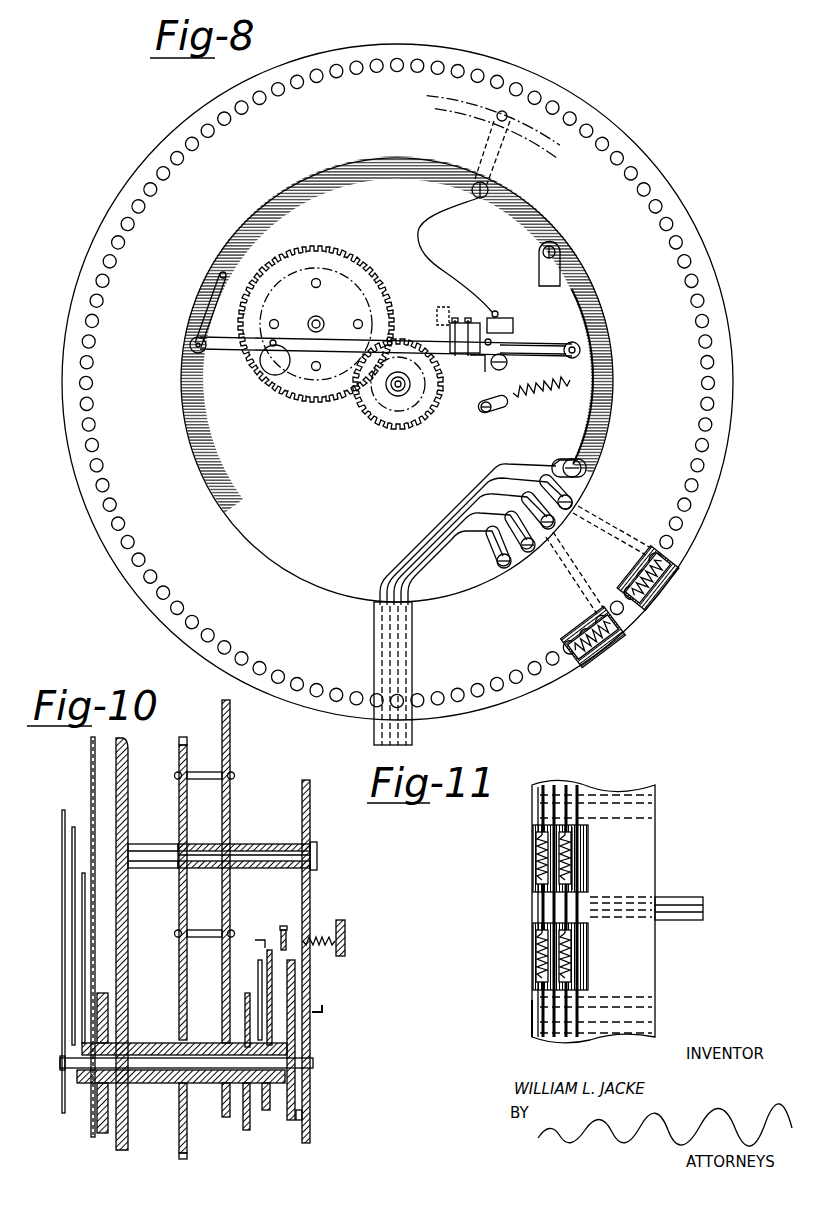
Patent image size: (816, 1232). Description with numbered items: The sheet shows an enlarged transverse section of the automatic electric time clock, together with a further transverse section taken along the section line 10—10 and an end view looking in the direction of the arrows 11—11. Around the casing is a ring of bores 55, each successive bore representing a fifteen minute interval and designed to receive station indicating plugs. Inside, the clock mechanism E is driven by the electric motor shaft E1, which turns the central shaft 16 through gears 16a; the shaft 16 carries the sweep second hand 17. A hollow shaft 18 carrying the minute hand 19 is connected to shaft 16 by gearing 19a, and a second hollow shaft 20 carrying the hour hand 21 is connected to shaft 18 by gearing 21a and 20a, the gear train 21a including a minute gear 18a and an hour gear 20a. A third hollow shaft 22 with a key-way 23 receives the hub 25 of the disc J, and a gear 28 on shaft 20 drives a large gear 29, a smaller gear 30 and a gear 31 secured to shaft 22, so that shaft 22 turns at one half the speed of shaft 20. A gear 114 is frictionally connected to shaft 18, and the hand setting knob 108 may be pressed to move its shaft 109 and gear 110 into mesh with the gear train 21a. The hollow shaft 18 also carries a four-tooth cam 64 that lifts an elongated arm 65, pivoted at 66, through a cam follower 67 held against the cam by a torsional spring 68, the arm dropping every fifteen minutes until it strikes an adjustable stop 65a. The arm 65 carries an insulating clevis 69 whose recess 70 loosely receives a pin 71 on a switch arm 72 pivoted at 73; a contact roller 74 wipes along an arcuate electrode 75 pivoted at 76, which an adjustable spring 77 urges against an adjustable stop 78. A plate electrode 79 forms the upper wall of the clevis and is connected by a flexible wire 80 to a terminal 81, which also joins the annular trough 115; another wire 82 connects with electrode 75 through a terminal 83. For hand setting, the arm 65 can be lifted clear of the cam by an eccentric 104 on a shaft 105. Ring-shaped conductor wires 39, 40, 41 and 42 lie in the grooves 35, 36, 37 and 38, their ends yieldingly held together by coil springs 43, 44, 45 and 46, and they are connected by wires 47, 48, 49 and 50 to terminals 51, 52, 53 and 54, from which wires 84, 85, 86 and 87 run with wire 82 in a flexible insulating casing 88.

In FIG. 8, the section line 10 is at (238, 264).
In FIG. 8, the direction arrows 11 is at (707, 592).
In FIG. 8, the groove 35 is at (693, 494).
In FIG. 11, the groove 35 is at (532, 788).
In FIG. 11, the groove 36 is at (548, 784).
In FIG. 11, the groove 37 is at (557, 790).
In FIG. 11, the groove 38 is at (580, 793).
In FIG. 11, the conductor wire 39 is at (542, 973).
In FIG. 11, the conductor wire 40 is at (542, 900).
In FIG. 11, the conductor wire 41 is at (557, 993).
In FIG. 11, the conductor wire 42 is at (575, 873).
In FIG. 8, the coil spring 43 is at (660, 588).
In FIG. 11, the coil spring 43 is at (537, 852).
In FIG. 8, the coil spring 44 is at (610, 647).
In FIG. 11, the coil spring 44 is at (543, 950).
In FIG. 11, the coil spring 45 is at (569, 850).
In FIG. 11, the coil spring 46 is at (582, 957).
In FIG. 8, the wire 47 is at (582, 502).
In FIG. 11, the wire 47 is at (542, 832).
In FIG. 8, the wire 48 is at (572, 530).
In FIG. 11, the wire 48 is at (542, 930).
In FIG. 8, the wire 49 is at (565, 556).
In FIG. 11, the wire 49 is at (575, 830).
In FIG. 8, the wire 50 is at (508, 575).
In FIG. 11, the wire 50 is at (580, 928).
In FIG. 8, the terminal 51 is at (583, 500).
In FIG. 8, the terminal 52 is at (553, 535).
In FIG. 8, the terminal 53 is at (531, 556).
In FIG. 8, the terminal 54 is at (503, 575).
In FIG. 8, the bores 55 is at (124, 249).
In FIG. 8, the four-tooth cam 64 is at (376, 418).
In FIG. 10, the four-tooth cam 64 is at (258, 1112).
In FIG. 8, the elongated arm 65 is at (437, 332).
In FIG. 8, the adjustable stop 65a is at (500, 395).
In FIG. 8, the pivot 66 is at (206, 355).
In FIG. 8, the cam follower 67 is at (452, 353).
In FIG. 8, the torsional spring 68 is at (212, 300).
In FIG. 8, the clevis 69 is at (485, 372).
In FIG. 8, the recess 70 is at (515, 360).
In FIG. 8, the pin 71 is at (493, 342).
In FIG. 8, the switch arm 72 is at (540, 353).
In FIG. 8, the pivot 73 is at (454, 308).
In FIG. 8, the contact roller 74 is at (571, 343).
In FIG. 8, the arcuate electrode 75 is at (590, 408).
In FIG. 8, the pivot 76 is at (583, 463).
In FIG. 8, the adjustable spring 77 is at (540, 394).
In FIG. 8, the adjustable stop 78 is at (538, 266).
In FIG. 8, the plate electrode 79 is at (514, 324).
In FIG. 8, the flexible electric wire 80 is at (426, 252).
In FIG. 8, the terminal 81 is at (489, 186).
In FIG. 8, the wire 82 is at (522, 465).
In FIG. 8, the terminal 83 is at (568, 458).
In FIG. 8, the wire 84 is at (475, 541).
In FIG. 8, the wire 85 is at (470, 549).
In FIG. 8, the wire 86 is at (464, 559).
In FIG. 8, the wire 87 is at (455, 568).
In FIG. 8, the flexible insulating casing 88 is at (413, 738).
In FIG. 8, the eccentric 104 is at (270, 374).
In FIG. 8, the shaft 105 is at (285, 350).
In FIG. 8, the annular trough 115 is at (424, 97).
In FIG. 10, the disc J is at (90, 752).
In FIG. 10, the central shaft 16 is at (60, 1063).
In FIG. 10, the gears 16a is at (303, 1025).
In FIG. 10, the sweep second hand 17 is at (62, 997).
In FIG. 10, the hollow shaft 18 is at (75, 1078).
In FIG. 10, the minute gear 18a is at (262, 1117).
In FIG. 10, the minute hand 19 is at (72, 875).
In FIG. 10, the gearing 19a is at (297, 973).
In FIG. 10, the second hollow shaft 20 is at (244, 1125).
In FIG. 10, the hour gear 20a is at (250, 1027).
In FIG. 10, the hour hand 21 is at (82, 933).
In FIG. 10, the gear train 21a is at (267, 962).
In FIG. 10, the third hollow shaft 22 is at (170, 1087).
In FIG. 10, the key-way 23 is at (96, 1043).
In FIG. 10, the hub 25 is at (101, 1137).
In FIG. 10, the gear 28 is at (245, 1024).
In FIG. 10, the large gear 29 is at (231, 897).
In FIG. 10, the smaller gear 30 is at (179, 900).
In FIG. 10, the gear 31 is at (180, 998).
In FIG. 10, the clock gears E is at (265, 938).
In FIG. 10, the electric motor shaft E1 is at (322, 1010).
In FIG. 10, the hand setting knob 108 is at (346, 920).
In FIG. 10, the shaft 109 is at (320, 936).
In FIG. 10, the gear 110 is at (285, 928).
In FIG. 10, the gear 114 is at (300, 1117).